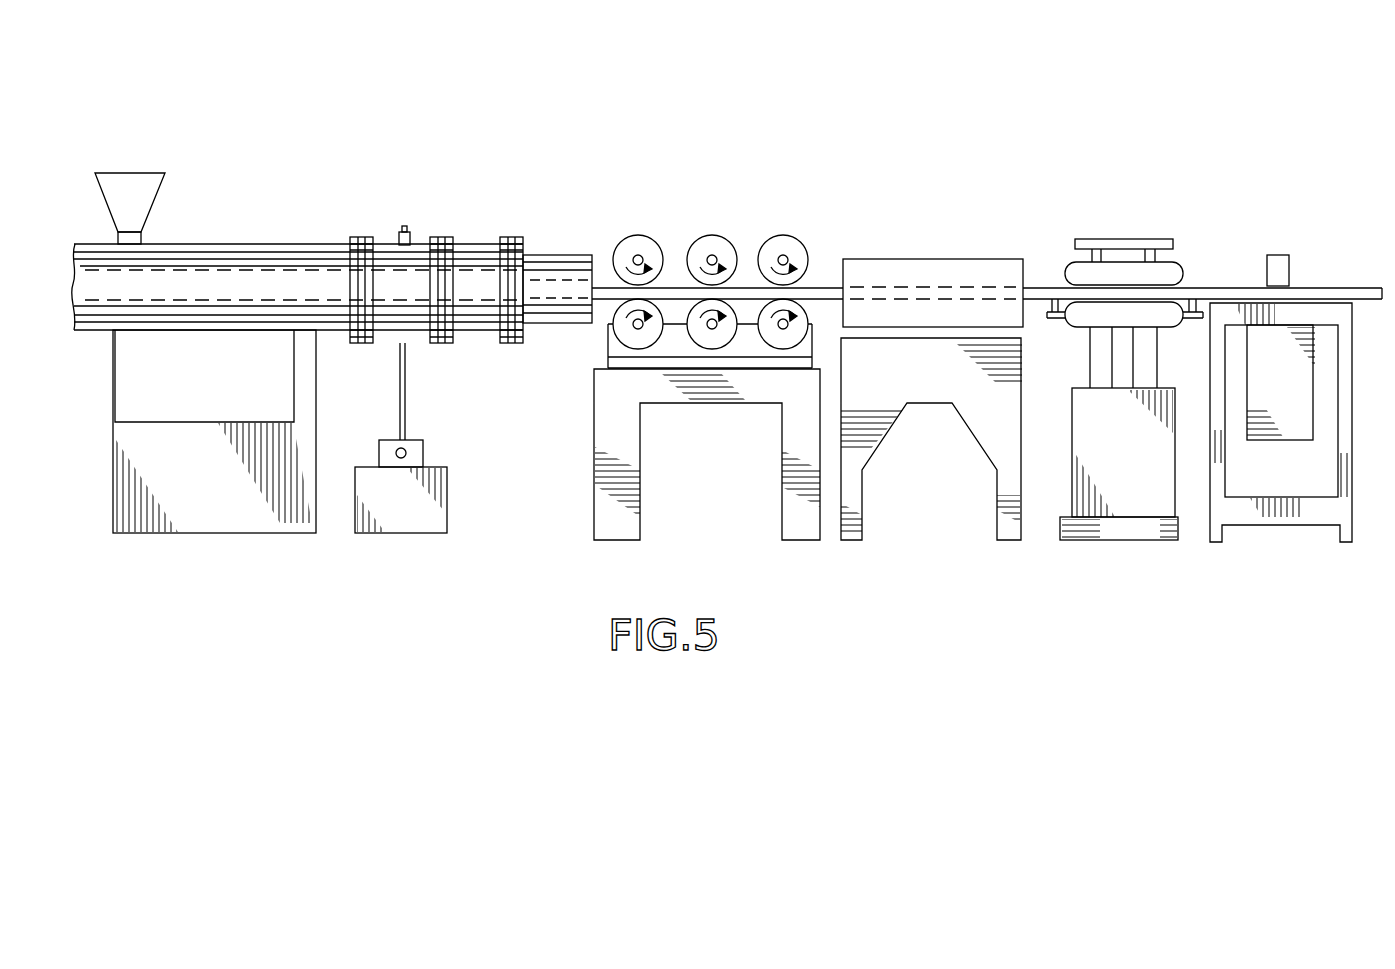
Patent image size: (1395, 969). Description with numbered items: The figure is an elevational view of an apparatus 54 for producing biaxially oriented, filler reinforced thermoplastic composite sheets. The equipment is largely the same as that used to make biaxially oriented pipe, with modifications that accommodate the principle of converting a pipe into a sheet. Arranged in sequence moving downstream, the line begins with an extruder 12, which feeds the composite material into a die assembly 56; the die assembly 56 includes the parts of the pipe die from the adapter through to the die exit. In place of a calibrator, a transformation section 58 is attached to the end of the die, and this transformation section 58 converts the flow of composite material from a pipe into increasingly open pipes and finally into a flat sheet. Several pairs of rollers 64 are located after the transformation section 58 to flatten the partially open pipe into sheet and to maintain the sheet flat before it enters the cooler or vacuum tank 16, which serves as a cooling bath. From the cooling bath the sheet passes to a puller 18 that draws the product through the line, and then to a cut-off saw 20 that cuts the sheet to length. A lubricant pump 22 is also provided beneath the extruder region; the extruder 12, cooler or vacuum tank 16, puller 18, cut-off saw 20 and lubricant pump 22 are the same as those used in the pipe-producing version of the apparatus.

The extruder 12 is at (222, 200).
The die assembly 56 is at (436, 195).
The transformation section 58 is at (554, 215).
The lubricant pump 22 is at (437, 467).
The apparatus 54 is at (684, 95).
The pairs of rollers 64 is at (696, 208).
The cooler or vacuum tank 16 is at (925, 218).
The puller 18 is at (1115, 198).
The cut-off saw 20 is at (1274, 216).